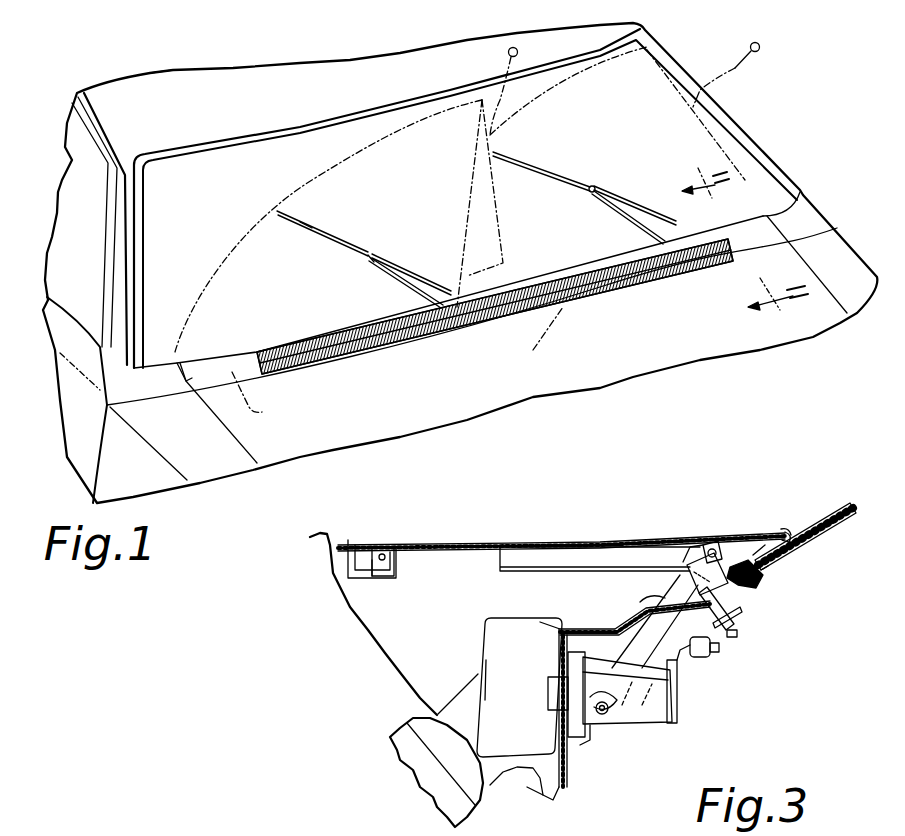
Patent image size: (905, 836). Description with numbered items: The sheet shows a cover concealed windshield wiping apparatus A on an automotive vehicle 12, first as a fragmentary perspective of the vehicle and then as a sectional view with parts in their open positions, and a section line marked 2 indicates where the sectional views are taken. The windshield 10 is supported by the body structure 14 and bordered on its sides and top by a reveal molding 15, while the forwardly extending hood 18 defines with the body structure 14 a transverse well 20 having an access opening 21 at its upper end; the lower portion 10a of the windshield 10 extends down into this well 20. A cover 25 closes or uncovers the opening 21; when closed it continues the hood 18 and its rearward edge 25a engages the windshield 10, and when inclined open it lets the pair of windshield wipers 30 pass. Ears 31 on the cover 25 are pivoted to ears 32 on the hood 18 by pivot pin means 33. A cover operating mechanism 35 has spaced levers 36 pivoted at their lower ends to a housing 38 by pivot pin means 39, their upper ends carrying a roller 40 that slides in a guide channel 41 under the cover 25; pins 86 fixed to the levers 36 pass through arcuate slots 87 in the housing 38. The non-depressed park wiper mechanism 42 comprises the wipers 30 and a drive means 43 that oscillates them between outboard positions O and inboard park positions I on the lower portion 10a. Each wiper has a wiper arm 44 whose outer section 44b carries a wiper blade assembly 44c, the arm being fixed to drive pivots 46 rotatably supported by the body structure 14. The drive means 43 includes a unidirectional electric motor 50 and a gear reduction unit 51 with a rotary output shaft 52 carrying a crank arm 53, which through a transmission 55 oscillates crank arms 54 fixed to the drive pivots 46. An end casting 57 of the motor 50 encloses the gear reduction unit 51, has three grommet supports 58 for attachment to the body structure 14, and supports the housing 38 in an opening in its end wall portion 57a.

In FIG. 1, the windshield 10 is at (218, 160).
In FIG. 3, the windshield 10 is at (830, 522).
In FIG. 3, the lower portion of the windshield 10a is at (773, 552).
In FIG. 1, the automotive vehicle 12 is at (173, 72).
In FIG. 1, the body structure 14 is at (120, 230).
In FIG. 3, the body structure 14 is at (558, 651).
In FIG. 1, the reveal molding 15 is at (278, 132).
In FIG. 1, the hood 18 is at (310, 455).
In FIG. 3, the hood 18 is at (325, 537).
In FIG. 3, the well 20 is at (675, 582).
In FIG. 3, the access opening 21 is at (753, 555).
In FIG. 1, the cover 25 is at (228, 358).
In FIG. 3, the cover 25 is at (428, 544).
In FIG. 1, the rearward edge of the cover 25a is at (293, 340).
In FIG. 3, the rearward edge of the cover 25a is at (787, 533).
In FIG. 1, the windshield wipers 30 is at (346, 228).
In FIG. 3, the windshield wipers 30 is at (725, 558).
In FIG. 3, the ears 31 is at (378, 548).
In FIG. 3, the ears 32 is at (398, 563).
In FIG. 3, the pivot pin means 33 is at (383, 562).
In FIG. 3, the cover operating mechanism 35 is at (666, 590).
In FIG. 3, the levers 36 is at (645, 612).
In FIG. 3, the housing 38 is at (645, 728).
In FIG. 3, the pivot pin means 39 is at (595, 718).
In FIG. 3, the roller 40 is at (695, 568).
In FIG. 3, the guide channel 41 is at (510, 552).
In FIG. 3, the non-depressed park wiper mechanism 42 is at (478, 645).
In FIG. 3, the drive means 43 is at (533, 628).
In FIG. 1, the wiper arm 44 is at (405, 281).
In FIG. 3, the wiper arm 44 is at (721, 627).
In FIG. 1, the outer wiper arm section 44b is at (367, 258).
In FIG. 1, the wiper blade assembly 44c is at (310, 227).
In FIG. 3, the drive pivots 46 is at (733, 596).
In FIG. 3, the electric motor 50 is at (400, 730).
In FIG. 3, the gear reduction unit 51 is at (485, 674).
In FIG. 3, the rotary output shaft 52 is at (680, 710).
In FIG. 3, the crank arm 53 is at (627, 690).
In FIG. 3, the crank arms 54 is at (743, 610).
In FIG. 3, the drive linkage or transmission 55 is at (737, 630).
In FIG. 3, the end casting 57 is at (498, 620).
In FIG. 3, the end wall portion 57a is at (570, 726).
In FIG. 3, the grommet supports 58 is at (548, 694).
In FIG. 3, the pins 86 is at (605, 714).
In FIG. 3, the arcuate slots 87 is at (593, 692).
In FIG. 1, the cover concealed windshield wiping apparatus A is at (729, 235).
In FIG. 1, the outboard positions O is at (634, 56).
In FIG. 1, the inboard positions I is at (391, 388).
In FIG. 1, the section line 2 is at (745, 240).